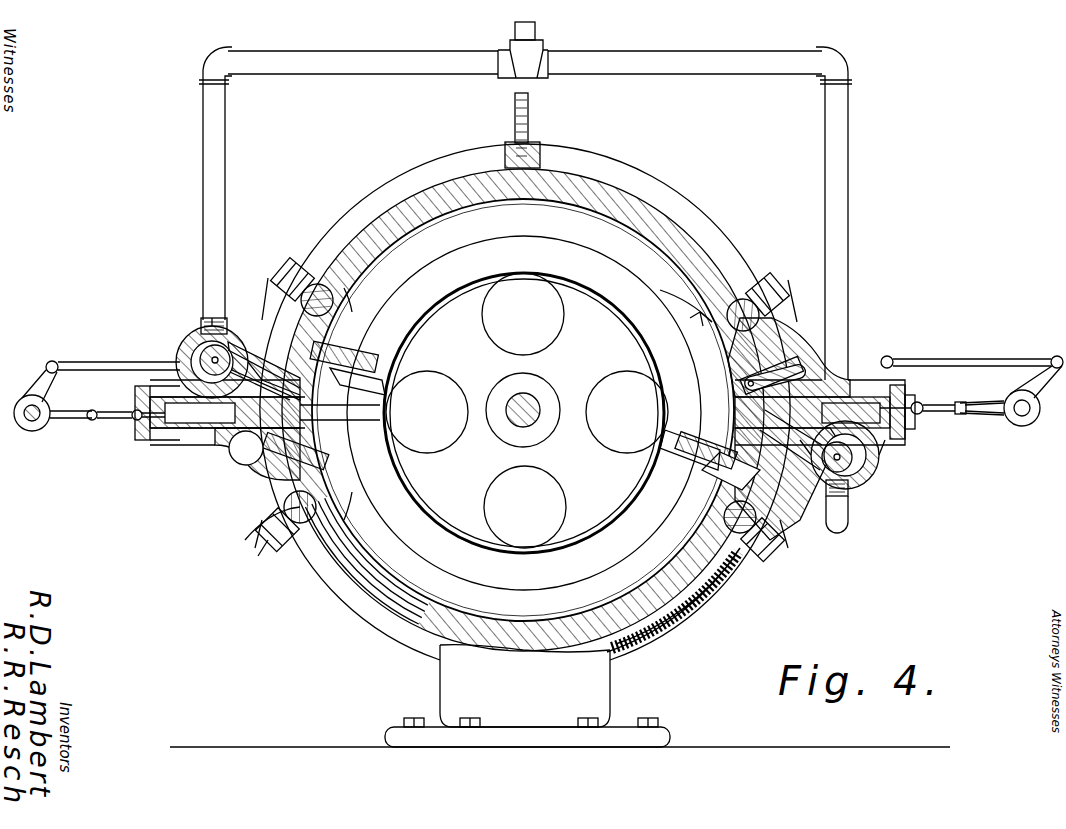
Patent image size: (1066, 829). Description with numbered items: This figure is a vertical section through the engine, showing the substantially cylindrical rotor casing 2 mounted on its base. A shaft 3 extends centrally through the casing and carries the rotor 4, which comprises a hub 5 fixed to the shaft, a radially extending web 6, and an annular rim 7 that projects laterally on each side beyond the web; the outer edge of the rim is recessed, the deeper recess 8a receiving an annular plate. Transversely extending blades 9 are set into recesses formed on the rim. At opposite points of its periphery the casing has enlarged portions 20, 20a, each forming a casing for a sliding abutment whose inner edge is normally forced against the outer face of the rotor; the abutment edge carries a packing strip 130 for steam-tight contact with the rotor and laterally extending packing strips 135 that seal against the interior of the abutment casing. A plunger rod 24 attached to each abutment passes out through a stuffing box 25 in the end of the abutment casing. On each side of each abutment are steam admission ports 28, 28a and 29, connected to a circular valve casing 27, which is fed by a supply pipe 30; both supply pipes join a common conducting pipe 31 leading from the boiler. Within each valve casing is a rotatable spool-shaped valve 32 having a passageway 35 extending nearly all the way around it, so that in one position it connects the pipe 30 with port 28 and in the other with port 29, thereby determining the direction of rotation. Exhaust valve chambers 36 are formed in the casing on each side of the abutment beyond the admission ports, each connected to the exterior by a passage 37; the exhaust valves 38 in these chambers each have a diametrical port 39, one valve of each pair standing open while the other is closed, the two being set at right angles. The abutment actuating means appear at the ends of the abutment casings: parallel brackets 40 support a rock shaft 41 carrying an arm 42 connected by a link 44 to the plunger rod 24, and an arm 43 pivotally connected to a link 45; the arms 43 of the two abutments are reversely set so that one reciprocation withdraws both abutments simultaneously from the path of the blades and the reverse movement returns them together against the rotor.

The rotor casing 2 is at (690, 240).
The shaft 3 is at (512, 422).
The rotor 4 is at (447, 300).
The hub 5 is at (545, 396).
The web 6 is at (524, 413).
The rim 7 is at (312, 364).
The recess 8a is at (790, 372).
The blades 9 is at (660, 438).
The enlarged portions 20 is at (870, 380).
The valve cylinder 20a is at (215, 446).
The plunger rod 24 is at (195, 425).
The stuffing box 25 is at (138, 430).
The valve casing 27 is at (890, 472).
The steam admission port 28 is at (800, 352).
The port 28a is at (150, 392).
The steam admission port 29 is at (730, 470).
The supply pipe 30 is at (226, 222).
The conducting pipe 31 is at (545, 30).
The rotatable valve 32 is at (200, 350).
The passageway 35 is at (230, 348).
The exhaust valve chambers 36 is at (766, 580).
The passage 37 is at (252, 559).
The exhaust valves 38 is at (312, 290).
The transverse passage 39 is at (350, 290).
The brackets 40 is at (944, 404).
The rock shaft 41 is at (1020, 420).
The arm 42 is at (980, 414).
The arm 43 is at (48, 362).
The link 44 is at (952, 412).
The link 45 is at (104, 366).
The packing strip 130 is at (382, 412).
The packing strips 135 is at (307, 452).